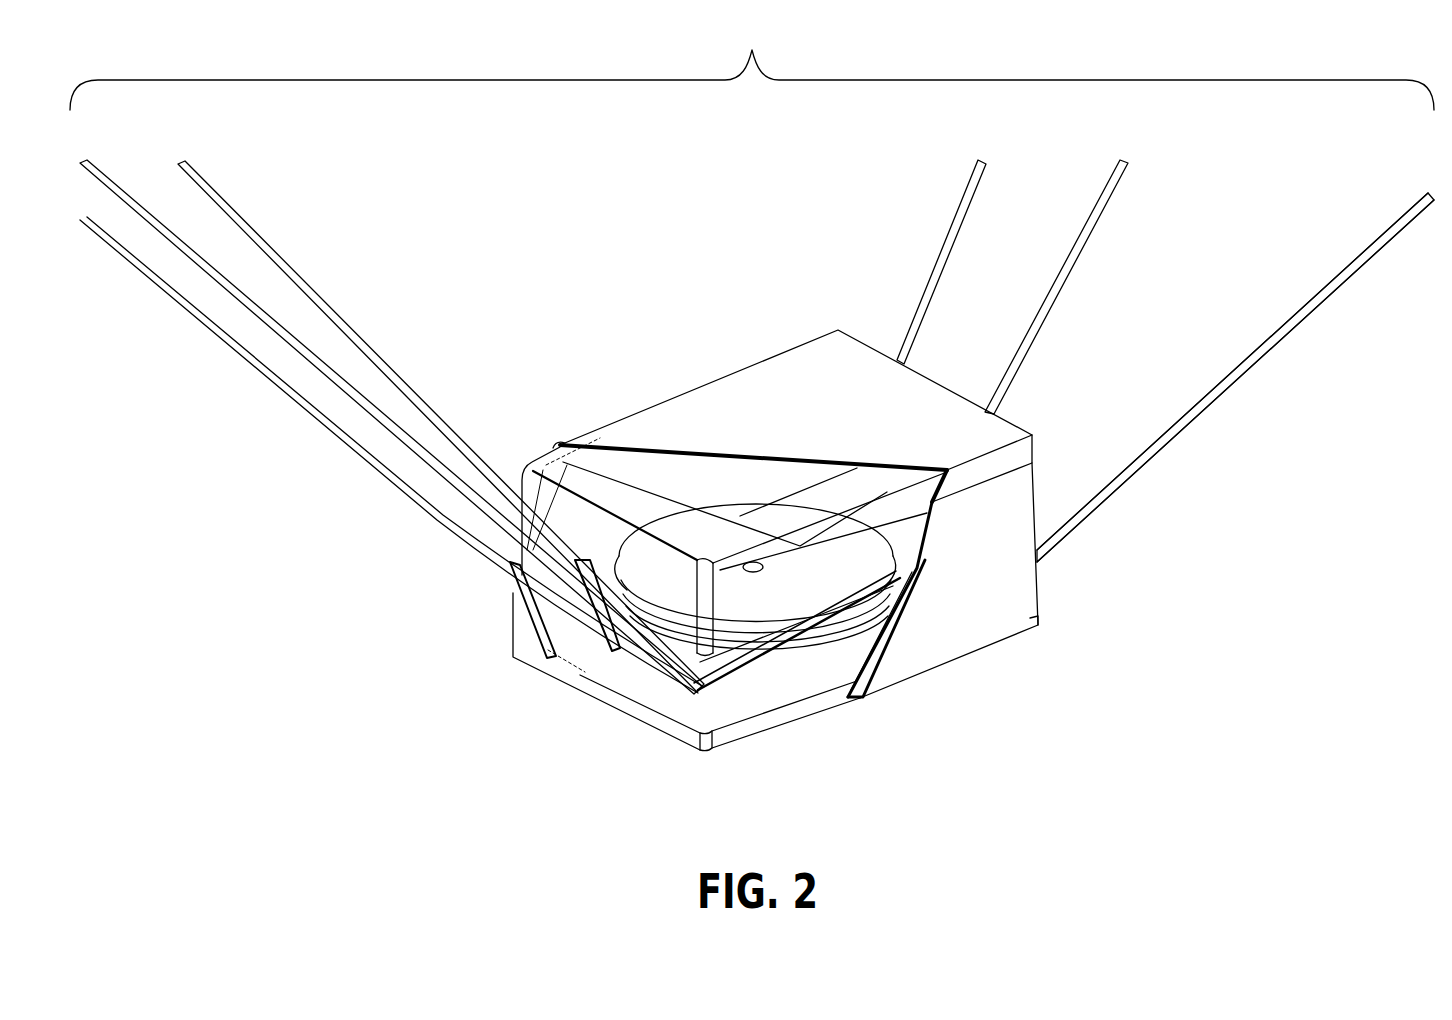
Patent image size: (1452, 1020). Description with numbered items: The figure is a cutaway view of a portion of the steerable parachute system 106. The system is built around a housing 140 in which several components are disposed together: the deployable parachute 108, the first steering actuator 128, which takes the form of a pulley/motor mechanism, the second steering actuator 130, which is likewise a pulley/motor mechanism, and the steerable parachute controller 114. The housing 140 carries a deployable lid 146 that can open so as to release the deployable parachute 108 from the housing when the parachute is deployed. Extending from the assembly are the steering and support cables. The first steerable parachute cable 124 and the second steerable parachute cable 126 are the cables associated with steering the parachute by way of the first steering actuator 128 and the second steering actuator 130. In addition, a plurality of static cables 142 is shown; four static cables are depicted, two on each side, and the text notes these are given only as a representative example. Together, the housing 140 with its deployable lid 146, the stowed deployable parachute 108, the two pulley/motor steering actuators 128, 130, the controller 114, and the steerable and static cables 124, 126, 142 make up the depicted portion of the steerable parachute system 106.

The steerable parachute system 106 is at (752, 60).
The deployable parachute 108 is at (587, 487).
The steerable parachute controller 114 is at (655, 703).
The first steerable parachute cable 124 is at (382, 352).
The second steerable parachute cable 126 is at (1152, 445).
The first steering actuator 128 is at (815, 617).
The second steering actuator 130 is at (870, 657).
The housing 140 is at (960, 618).
The static cables 142 is at (268, 323).
The deployable lid 146 is at (782, 365).